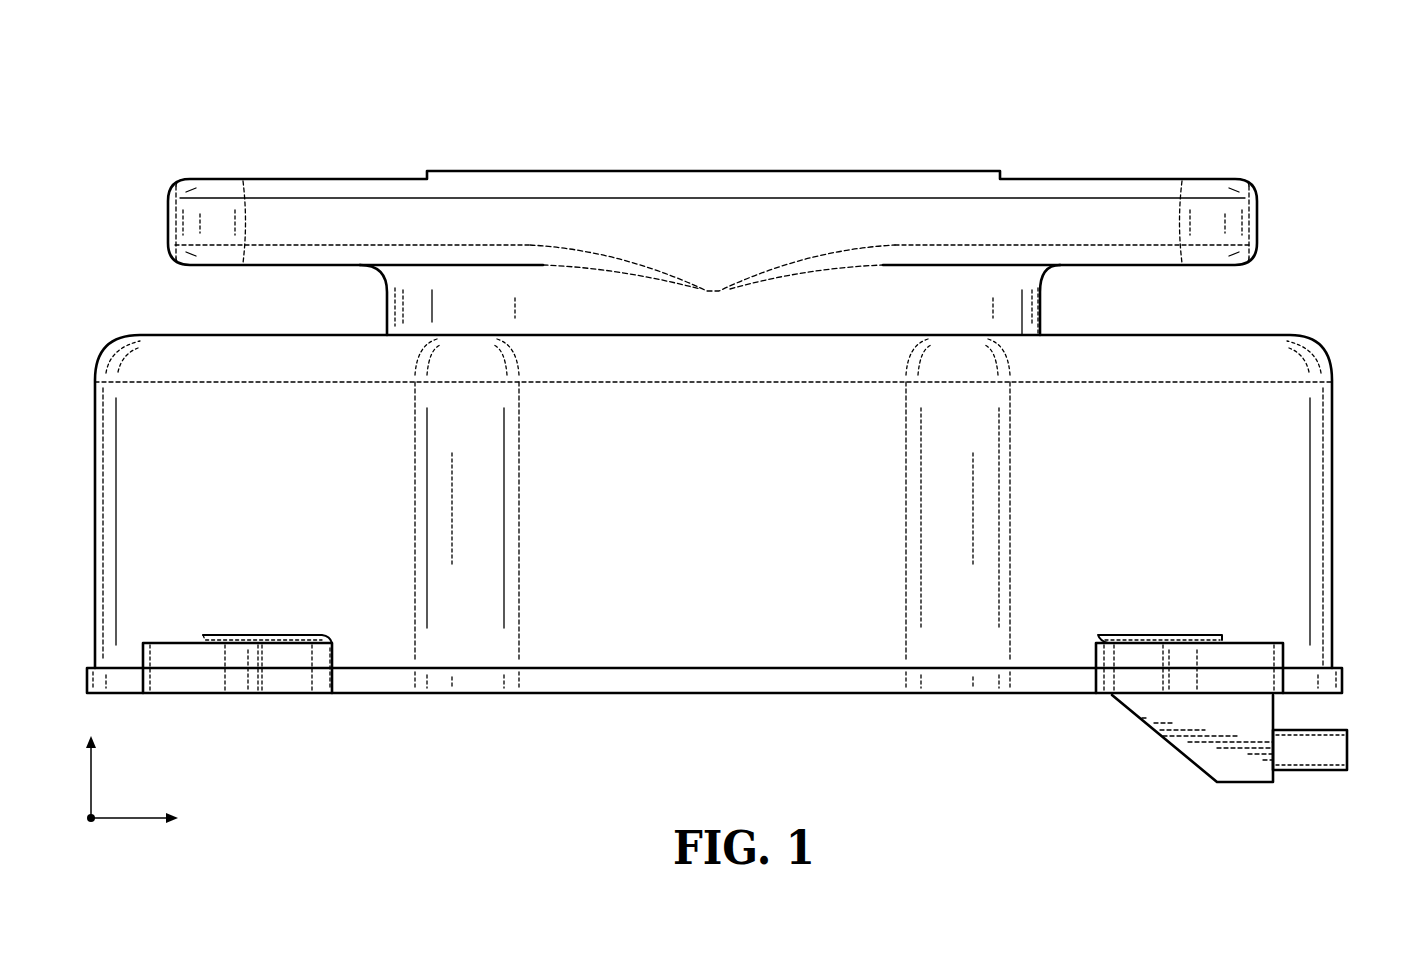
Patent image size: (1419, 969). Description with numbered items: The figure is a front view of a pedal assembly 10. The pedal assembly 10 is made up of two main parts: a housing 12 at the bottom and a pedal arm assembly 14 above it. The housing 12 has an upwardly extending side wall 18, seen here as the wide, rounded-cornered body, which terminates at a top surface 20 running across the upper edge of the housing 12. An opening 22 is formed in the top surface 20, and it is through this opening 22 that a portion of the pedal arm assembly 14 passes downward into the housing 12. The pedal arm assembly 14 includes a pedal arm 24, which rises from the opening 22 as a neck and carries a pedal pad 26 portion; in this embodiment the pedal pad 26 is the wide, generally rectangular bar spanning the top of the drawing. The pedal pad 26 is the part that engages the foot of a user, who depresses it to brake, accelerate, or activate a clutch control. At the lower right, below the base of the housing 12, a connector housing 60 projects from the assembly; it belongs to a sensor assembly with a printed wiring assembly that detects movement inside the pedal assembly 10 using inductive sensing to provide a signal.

The pedal assembly 10 is at (824, 104).
The housing 12 is at (1347, 577).
The pedal arm assembly 14 is at (1286, 272).
The side wall 18 is at (1333, 428).
The top surface 20 is at (1263, 335).
The opening 22 is at (1022, 335).
The pedal arm 24 is at (1041, 297).
The pedal pad 26 is at (1167, 178).
The connector housing 60 is at (1243, 783).